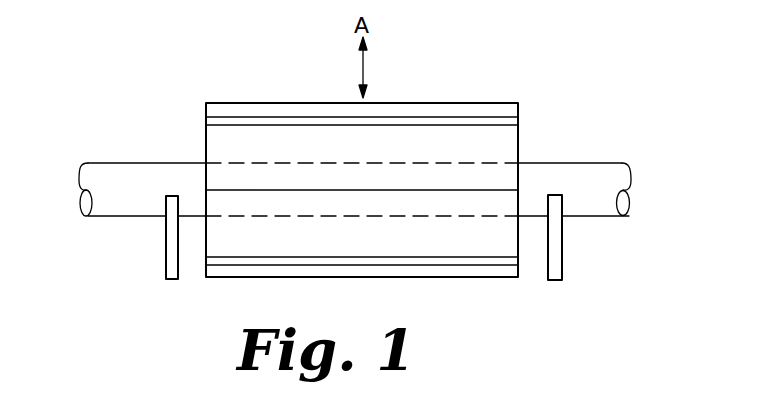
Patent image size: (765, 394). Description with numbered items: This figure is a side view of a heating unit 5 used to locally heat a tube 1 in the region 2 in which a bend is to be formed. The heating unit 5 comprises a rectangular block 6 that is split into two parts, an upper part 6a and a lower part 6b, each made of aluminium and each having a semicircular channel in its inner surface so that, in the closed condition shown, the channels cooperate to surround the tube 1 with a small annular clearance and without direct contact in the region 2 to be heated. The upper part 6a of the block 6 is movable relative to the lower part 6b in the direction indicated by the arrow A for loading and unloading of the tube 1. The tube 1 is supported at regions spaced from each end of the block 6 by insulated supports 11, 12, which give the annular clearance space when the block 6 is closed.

The tube 1 is at (117, 178).
The region 2 is at (250, 215).
The heating unit 5 is at (367, 168).
The rectangular block 6 is at (205, 138).
The upper part 6a is at (497, 156).
The lower part 6b is at (407, 243).
The insulated support 11 is at (168, 257).
The insulated support 12 is at (558, 247).